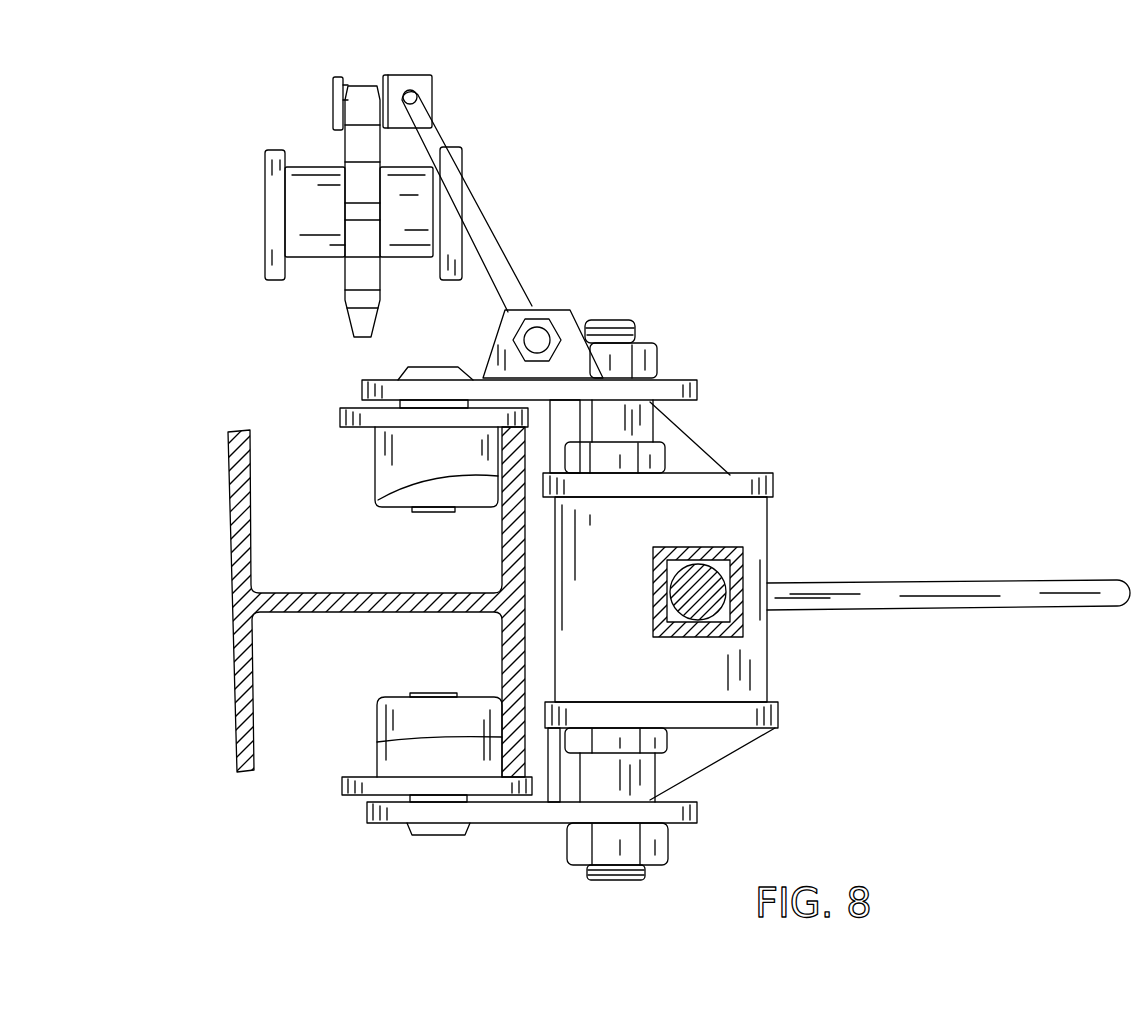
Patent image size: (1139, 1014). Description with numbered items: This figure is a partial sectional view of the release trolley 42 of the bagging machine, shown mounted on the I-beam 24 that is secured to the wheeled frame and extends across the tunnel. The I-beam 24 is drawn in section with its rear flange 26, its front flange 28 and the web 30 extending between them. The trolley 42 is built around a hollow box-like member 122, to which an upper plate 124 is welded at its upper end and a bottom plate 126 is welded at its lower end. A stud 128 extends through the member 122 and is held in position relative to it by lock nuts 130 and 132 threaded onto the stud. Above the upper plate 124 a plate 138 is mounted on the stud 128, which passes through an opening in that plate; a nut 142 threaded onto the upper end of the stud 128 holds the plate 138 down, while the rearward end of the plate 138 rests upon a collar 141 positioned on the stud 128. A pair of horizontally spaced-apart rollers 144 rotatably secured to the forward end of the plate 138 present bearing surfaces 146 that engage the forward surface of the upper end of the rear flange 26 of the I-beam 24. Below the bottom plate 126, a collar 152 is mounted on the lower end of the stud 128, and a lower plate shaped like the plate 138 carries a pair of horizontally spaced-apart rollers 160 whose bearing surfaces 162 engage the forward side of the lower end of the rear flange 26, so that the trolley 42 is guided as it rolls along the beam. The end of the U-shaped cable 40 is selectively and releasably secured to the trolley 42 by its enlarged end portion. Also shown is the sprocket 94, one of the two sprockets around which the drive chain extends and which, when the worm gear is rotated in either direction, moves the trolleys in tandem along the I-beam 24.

The sprocket 94 is at (345, 148).
The plate 138 is at (352, 386).
The stud 128 is at (630, 322).
The nut 142 is at (658, 355).
The collar 141 is at (625, 427).
The lock nut 130 is at (660, 453).
The upper plate 124 is at (735, 480).
The trolley 42 is at (805, 495).
The hollow box-like member 122 is at (740, 530).
The U-shaped cable 40 is at (1060, 596).
The bottom plate 126 is at (778, 711).
The lock nut 132 is at (652, 735).
The collar 152 is at (652, 778).
The upper resilient bushing 144 is at (395, 465).
The bearing surfaces 146 is at (382, 497).
The rollers 160 is at (392, 718).
The bearing surfaces 162 is at (497, 740).
The I-beam 24 is at (212, 538).
The front flange 28 is at (230, 652).
The web 30 is at (363, 608).
The rear flange 26 is at (502, 663).